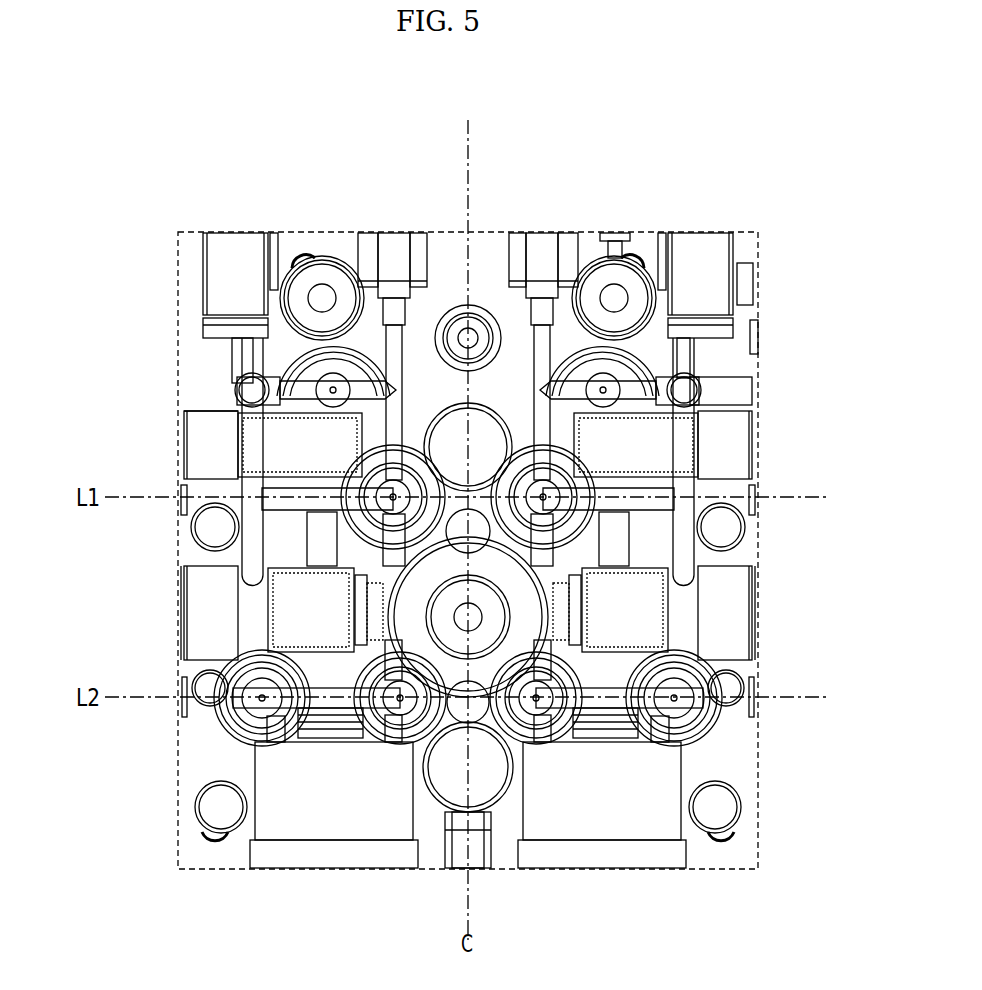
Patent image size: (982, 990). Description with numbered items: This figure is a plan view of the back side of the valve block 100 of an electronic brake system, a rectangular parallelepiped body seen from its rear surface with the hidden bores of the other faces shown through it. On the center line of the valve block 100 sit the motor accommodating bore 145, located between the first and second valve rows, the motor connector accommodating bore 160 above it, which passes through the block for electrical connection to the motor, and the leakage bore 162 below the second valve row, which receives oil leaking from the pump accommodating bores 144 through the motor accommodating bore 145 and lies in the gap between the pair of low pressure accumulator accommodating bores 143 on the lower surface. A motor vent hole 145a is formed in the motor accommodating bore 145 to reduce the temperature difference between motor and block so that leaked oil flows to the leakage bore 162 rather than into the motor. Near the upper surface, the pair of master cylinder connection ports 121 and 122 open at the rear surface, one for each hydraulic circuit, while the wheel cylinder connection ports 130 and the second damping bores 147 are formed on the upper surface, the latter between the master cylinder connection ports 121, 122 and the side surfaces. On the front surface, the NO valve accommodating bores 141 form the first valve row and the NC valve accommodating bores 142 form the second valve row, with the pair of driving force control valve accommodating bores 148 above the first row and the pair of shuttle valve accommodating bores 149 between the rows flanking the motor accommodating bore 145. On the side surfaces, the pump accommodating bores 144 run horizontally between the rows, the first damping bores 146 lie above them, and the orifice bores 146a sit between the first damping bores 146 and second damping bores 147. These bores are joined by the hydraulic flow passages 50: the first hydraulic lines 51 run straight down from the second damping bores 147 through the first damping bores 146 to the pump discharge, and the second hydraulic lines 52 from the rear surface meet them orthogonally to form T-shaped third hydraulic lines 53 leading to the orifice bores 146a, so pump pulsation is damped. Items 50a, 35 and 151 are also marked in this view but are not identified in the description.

The valve block 100 is at (792, 203).
The hydraulic flow passages 50 is at (70, 316).
The fastening portion 50a is at (320, 580).
The first hydraulic lines 51 is at (240, 355).
The second hydraulic lines 52 is at (183, 378).
The third hydraulic lines 53 is at (125, 335).
The motor shaft 35 is at (400, 392).
The master cylinder connection port 121 is at (612, 272).
The master cylinder connection port 122 is at (334, 271).
The wheel cylinder connection ports 130 is at (372, 240).
The NO valve accommodating bores 141 is at (360, 515).
The NC valve accommodating bores 142 is at (225, 722).
The low pressure accumulator accommodating bores 143 is at (292, 855).
The pump accommodating bores 144 is at (195, 612).
The motor accommodating bore 145 is at (523, 603).
The motor vent hole 145a is at (440, 830).
The first damping bores 146 is at (200, 440).
The orifice bores 146a is at (183, 405).
The second damping bores 147 is at (224, 246).
The driving force control valve accommodating bores 148 is at (262, 345).
The shuttle valve accommodating bores 149 is at (690, 570).
The first bolt hole 151 is at (472, 302).
The motor connector accommodating bore 160 is at (488, 459).
The leakage bore 162 is at (488, 779).